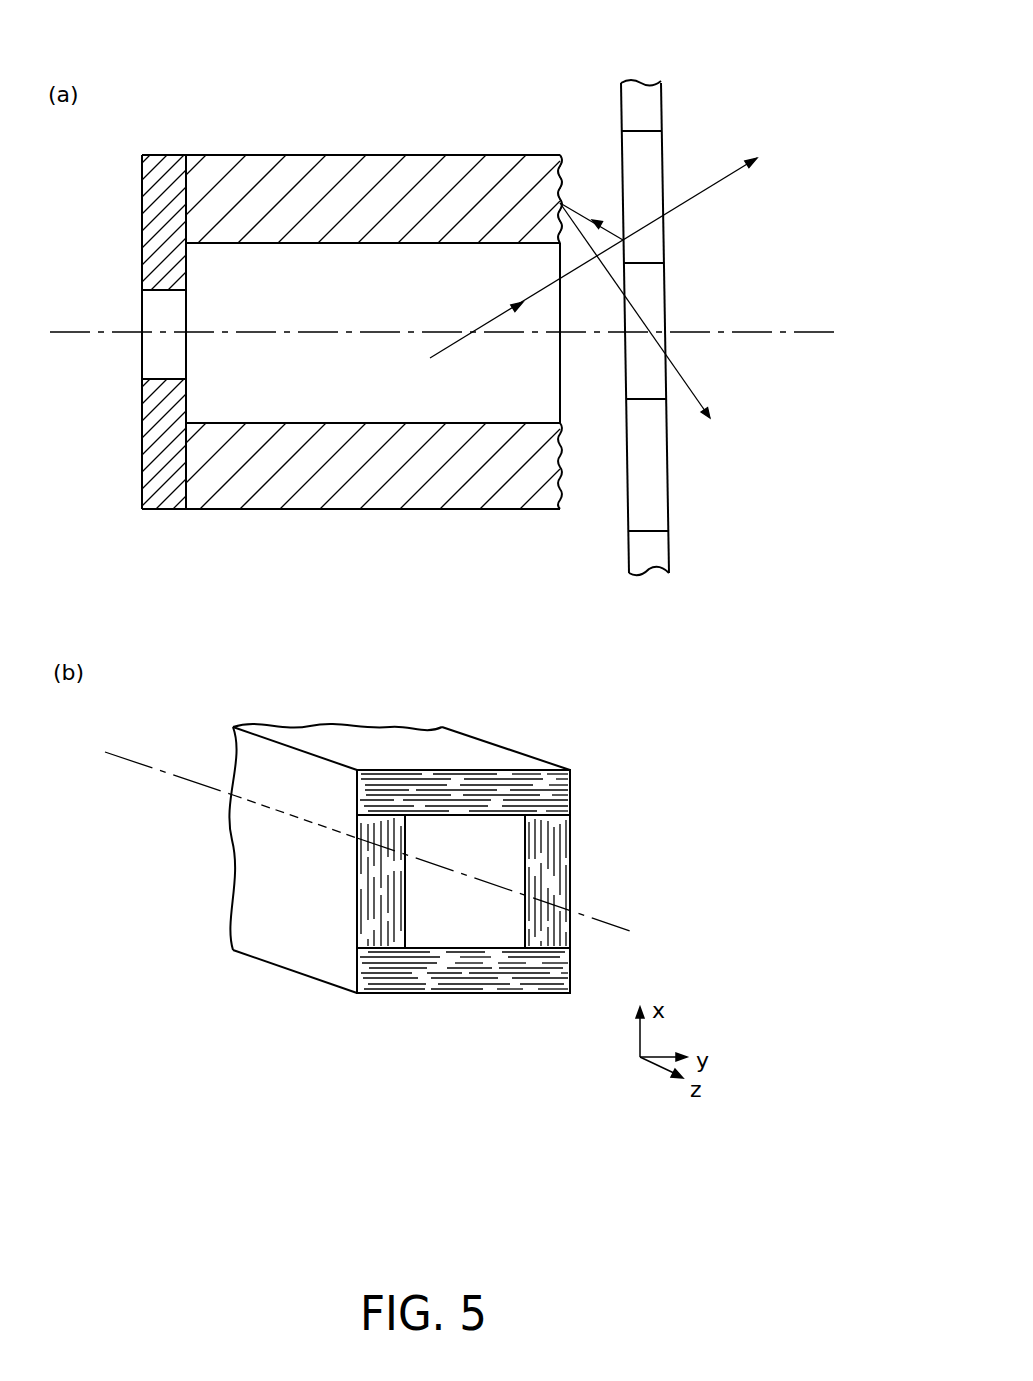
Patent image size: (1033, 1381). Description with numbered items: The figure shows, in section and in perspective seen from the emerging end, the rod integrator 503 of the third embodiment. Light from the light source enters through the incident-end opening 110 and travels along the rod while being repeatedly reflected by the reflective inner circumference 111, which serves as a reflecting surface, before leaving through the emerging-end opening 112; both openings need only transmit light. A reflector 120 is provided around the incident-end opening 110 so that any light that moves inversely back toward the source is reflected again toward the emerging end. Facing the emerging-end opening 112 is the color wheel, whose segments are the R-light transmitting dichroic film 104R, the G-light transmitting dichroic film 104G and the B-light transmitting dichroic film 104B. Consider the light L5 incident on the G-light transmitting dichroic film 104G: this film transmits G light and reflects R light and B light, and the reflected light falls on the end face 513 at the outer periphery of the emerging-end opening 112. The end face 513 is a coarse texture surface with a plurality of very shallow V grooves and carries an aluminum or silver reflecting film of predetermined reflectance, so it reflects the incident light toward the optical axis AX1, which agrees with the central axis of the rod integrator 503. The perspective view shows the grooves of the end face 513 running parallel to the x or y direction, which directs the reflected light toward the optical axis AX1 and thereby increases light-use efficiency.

The rod integrator 503 is at (379, 104).
The reflective inner circumference 111 is at (450, 243).
The reflector 120 is at (180, 278).
The incident-end opening 110 is at (143, 323).
The emerging-end opening 112 is at (563, 405).
The end face 513 is at (560, 178).
The light L5 is at (540, 284).
The optical axis AX1 is at (765, 332).
The R-light transmitting dichroic film 104R is at (661, 106).
The G-light transmitting dichroic film 104G is at (661, 142).
The B-light transmitting dichroic film 104B is at (662, 286).